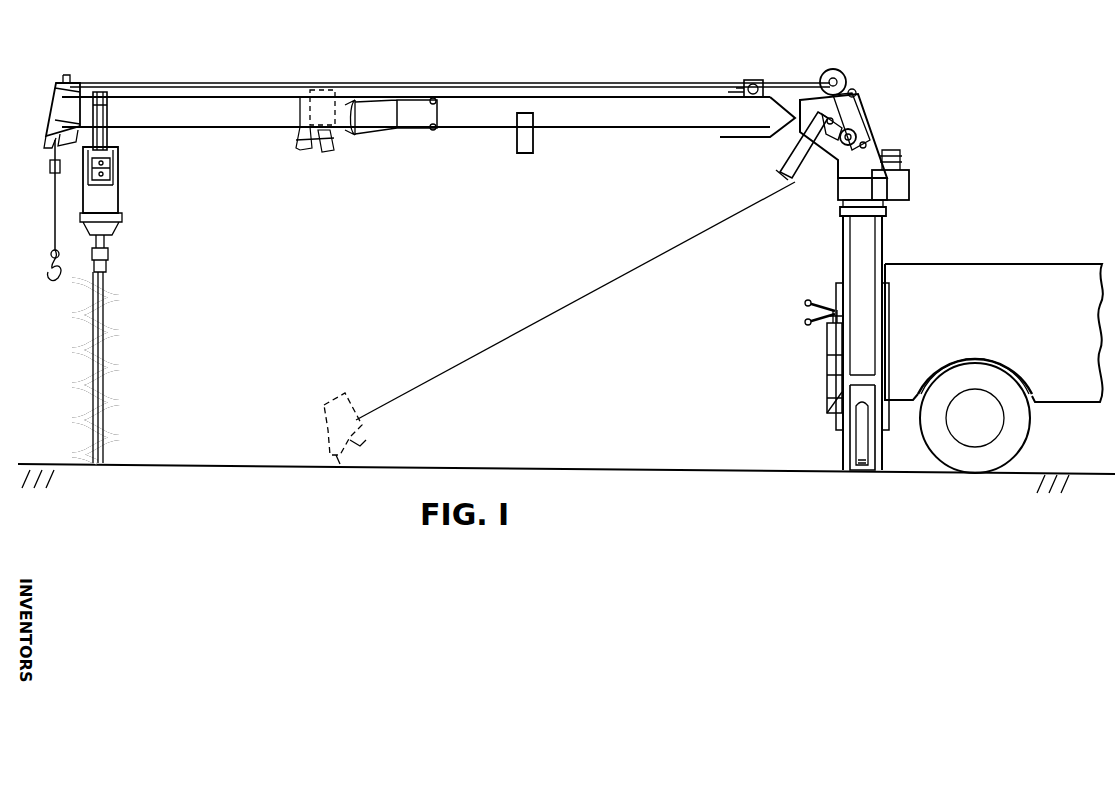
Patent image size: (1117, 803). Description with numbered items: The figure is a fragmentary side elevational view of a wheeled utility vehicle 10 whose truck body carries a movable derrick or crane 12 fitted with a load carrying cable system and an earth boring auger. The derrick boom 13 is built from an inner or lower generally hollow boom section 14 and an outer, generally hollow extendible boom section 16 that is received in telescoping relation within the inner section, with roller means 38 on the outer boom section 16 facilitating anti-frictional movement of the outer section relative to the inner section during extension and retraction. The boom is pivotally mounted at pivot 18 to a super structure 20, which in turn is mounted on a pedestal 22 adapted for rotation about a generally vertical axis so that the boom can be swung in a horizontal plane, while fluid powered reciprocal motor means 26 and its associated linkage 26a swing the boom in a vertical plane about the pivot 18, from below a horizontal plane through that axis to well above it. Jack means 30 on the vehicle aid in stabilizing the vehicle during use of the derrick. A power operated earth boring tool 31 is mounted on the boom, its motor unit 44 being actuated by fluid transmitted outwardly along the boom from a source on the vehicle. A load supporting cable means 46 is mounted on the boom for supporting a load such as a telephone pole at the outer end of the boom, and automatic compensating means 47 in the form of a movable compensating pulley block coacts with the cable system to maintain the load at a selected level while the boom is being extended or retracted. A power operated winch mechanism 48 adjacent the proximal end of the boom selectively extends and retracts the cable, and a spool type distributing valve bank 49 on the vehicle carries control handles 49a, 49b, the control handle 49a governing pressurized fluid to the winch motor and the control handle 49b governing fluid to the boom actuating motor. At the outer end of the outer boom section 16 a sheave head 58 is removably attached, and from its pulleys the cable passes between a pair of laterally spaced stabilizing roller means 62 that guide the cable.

The wheeled utility vehicle 10 is at (996, 240).
The derrick or crane 12 is at (876, 90).
The derrick boom 13 is at (578, 130).
The inner boom section 14 is at (622, 120).
The outer boom section 16 is at (252, 118).
The pivot 18 is at (866, 146).
The super structure 20 is at (850, 186).
The pedestal 22 is at (846, 224).
The fluid powered reciprocal motor means 26 is at (786, 172).
The linkage 26a is at (842, 122).
The jack means 30 is at (856, 440).
The earth boring tool 31 is at (134, 288).
The roller means 38 is at (434, 98).
The motor unit 44 is at (119, 180).
The load supporting cable means 46 is at (263, 71).
The automatic compensating means 47 is at (740, 88).
The winch mechanism 48 is at (851, 72).
The distributing valve bank 49 is at (828, 350).
The control handle 49a is at (806, 300).
The control handle 49b is at (806, 324).
The sheave head 58 is at (60, 104).
The stabilizing roller means 62 is at (46, 142).